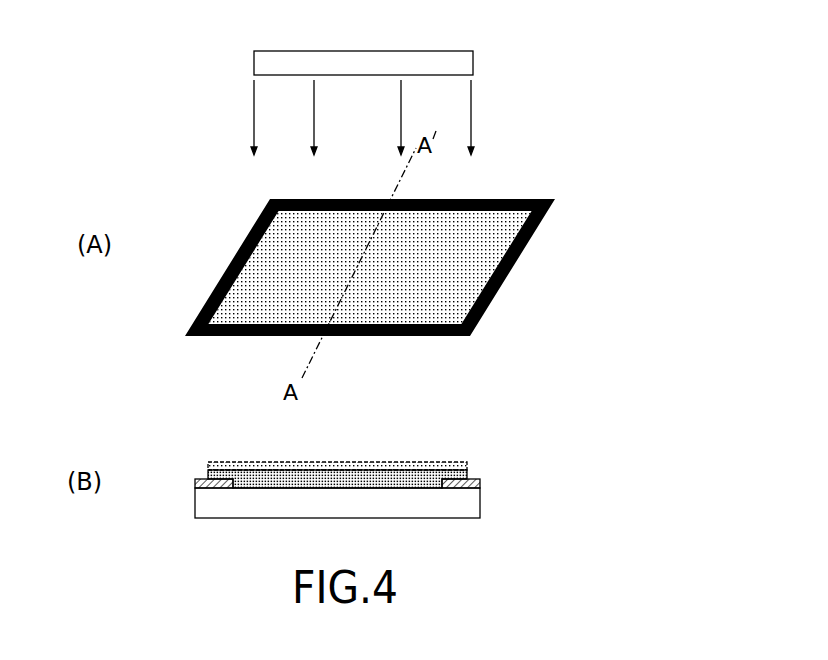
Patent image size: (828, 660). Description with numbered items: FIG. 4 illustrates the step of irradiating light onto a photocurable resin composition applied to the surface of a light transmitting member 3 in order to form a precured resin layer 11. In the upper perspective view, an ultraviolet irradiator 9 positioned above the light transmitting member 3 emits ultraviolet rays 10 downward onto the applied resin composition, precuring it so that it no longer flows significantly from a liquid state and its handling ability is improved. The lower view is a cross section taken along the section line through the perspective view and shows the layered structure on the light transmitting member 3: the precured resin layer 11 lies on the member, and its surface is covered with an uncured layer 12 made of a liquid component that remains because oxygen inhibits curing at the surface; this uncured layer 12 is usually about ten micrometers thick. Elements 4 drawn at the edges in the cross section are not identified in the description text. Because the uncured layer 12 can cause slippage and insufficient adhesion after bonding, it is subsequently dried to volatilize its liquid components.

The light transmitting member 3 is at (535, 230).
The electrode 4 is at (480, 483).
The ultraviolet irradiator 9 is at (473, 62).
The ultraviolet rays 10 is at (471, 122).
The precured resin layer 11 is at (467, 473).
The uncured layer 12 is at (432, 290).